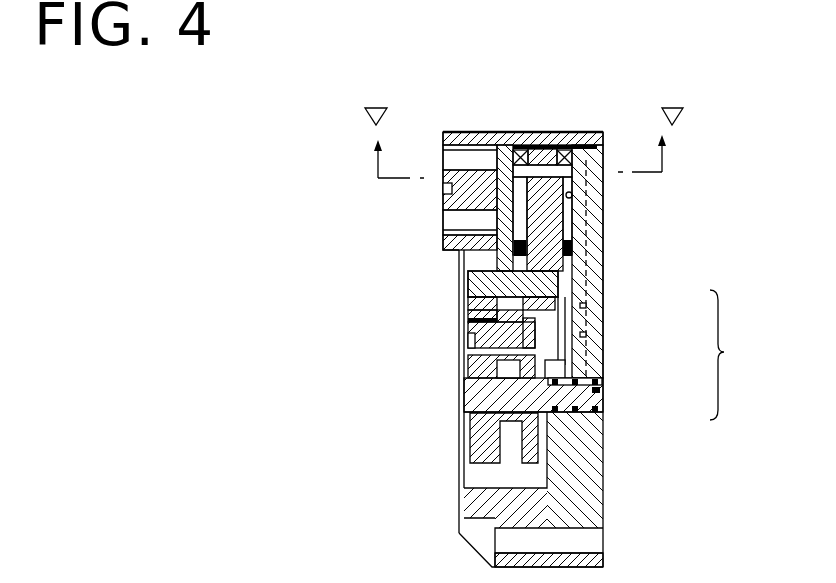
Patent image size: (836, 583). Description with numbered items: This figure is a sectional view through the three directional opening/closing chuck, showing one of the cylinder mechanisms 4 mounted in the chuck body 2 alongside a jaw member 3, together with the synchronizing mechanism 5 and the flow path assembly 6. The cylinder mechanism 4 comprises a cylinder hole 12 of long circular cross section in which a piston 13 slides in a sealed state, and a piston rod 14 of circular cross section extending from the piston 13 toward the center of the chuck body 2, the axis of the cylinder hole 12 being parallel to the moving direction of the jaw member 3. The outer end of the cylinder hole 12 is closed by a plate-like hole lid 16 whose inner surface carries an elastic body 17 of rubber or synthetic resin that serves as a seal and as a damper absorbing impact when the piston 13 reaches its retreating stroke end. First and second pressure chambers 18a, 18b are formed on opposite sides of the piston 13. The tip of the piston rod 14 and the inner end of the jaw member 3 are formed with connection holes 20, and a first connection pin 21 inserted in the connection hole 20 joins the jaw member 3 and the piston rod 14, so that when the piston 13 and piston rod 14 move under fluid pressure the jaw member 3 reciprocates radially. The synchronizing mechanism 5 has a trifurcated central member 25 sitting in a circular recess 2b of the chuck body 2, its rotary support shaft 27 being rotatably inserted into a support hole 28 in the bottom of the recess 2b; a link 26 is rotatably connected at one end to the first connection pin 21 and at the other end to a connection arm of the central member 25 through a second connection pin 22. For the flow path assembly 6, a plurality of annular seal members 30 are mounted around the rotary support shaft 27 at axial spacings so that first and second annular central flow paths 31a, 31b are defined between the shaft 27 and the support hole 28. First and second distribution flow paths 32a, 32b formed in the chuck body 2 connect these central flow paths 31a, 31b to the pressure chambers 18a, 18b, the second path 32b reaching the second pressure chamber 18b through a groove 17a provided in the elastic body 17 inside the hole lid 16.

The chuck body 2 is at (592, 508).
The circular recess 2b is at (478, 483).
The jaw member 3 is at (452, 190).
The cylinder mechanism 4 is at (537, 122).
The synchronizing mechanism 5 is at (445, 433).
The flow path assembly 6 is at (730, 355).
The cylinder hole 12 is at (583, 197).
The piston 13 is at (527, 133).
The piston rod 14 is at (527, 223).
The hole lid 16 is at (602, 138).
The elastic body 17 is at (510, 133).
The groove 17a is at (583, 133).
The first pressure chamber 18a is at (572, 232).
The second pressure chamber 18b is at (558, 133).
The connection hole 20 is at (462, 266).
The first connection pin 21 is at (468, 290).
The second connection pin 22 is at (468, 348).
The central member 25 is at (472, 453).
The link 26 is at (468, 322).
The rotary support shaft 27 is at (466, 397).
The support hole 28 is at (600, 395).
The annular seal member 30 is at (588, 442).
The first annular central flow path 31a is at (560, 368).
The second annular central flow path 31b is at (565, 386).
The first distribution flow path 32a is at (585, 335).
The second distribution flow path 32b is at (585, 306).